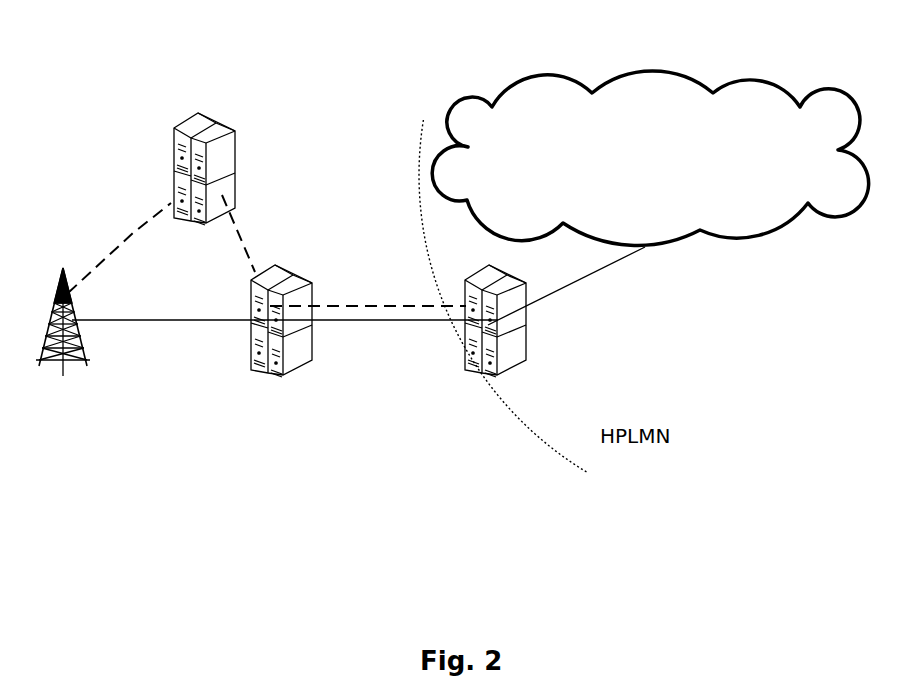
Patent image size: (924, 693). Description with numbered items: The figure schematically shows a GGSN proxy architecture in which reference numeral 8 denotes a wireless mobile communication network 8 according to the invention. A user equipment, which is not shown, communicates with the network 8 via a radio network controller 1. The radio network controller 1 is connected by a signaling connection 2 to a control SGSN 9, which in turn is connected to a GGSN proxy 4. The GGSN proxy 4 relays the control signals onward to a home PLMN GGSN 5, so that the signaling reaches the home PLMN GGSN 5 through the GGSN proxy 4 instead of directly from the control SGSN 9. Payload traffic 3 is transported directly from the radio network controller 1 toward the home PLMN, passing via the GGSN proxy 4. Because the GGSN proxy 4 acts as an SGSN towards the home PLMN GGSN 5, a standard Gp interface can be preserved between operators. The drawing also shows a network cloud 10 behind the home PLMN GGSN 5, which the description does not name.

The radio network controller 1 is at (64, 277).
The signaling connection 2 is at (242, 240).
The payload traffic 3 is at (215, 322).
The GGSN proxy 4 is at (278, 266).
The home PLMN GGSN 5 is at (527, 357).
The wireless mobile communication network 8 is at (128, 389).
The control SGSN 9 is at (217, 123).
The packet data network 10 is at (650, 158).